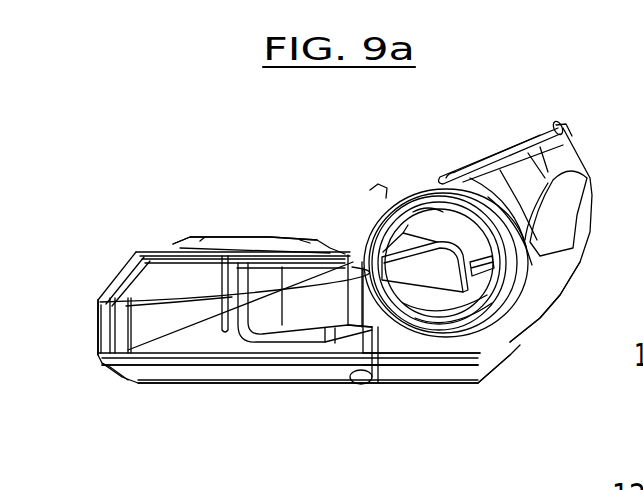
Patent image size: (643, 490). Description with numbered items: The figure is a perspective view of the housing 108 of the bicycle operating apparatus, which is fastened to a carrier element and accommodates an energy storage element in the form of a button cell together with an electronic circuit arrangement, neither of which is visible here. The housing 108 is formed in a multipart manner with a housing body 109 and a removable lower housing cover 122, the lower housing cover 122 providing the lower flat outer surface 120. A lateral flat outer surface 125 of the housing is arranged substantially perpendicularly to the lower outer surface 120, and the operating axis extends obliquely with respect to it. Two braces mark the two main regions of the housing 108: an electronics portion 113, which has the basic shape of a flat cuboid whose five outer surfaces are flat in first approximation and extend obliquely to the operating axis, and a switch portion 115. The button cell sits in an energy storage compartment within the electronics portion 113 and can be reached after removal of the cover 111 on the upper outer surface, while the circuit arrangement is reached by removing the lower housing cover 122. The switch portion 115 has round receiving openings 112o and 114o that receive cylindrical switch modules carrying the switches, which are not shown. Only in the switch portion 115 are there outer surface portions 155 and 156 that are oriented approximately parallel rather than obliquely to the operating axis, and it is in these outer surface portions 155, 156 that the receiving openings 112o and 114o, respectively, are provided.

The housing 108 is at (522, 372).
The housing body 109 is at (290, 313).
The cover 111 is at (250, 238).
The receiving opening 112o is at (486, 157).
The electronics portion 113 is at (347, 130).
The receiving opening 114o is at (420, 240).
The switch portion 115 is at (597, 130).
The lower flat outer surface 120 is at (172, 384).
The lower housing cover 122 is at (404, 380).
The lateral flat outer surface 125 is at (95, 330).
The outer surface portion 155 is at (498, 325).
The outer surface portion 156 is at (558, 128).